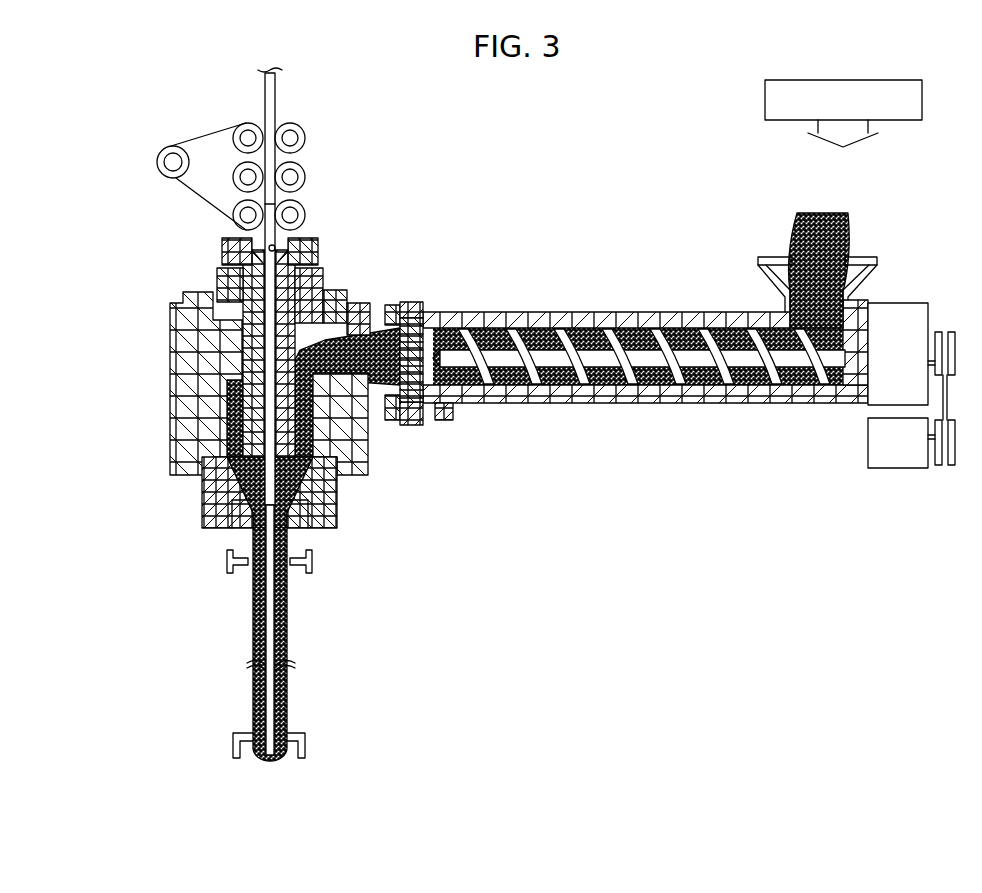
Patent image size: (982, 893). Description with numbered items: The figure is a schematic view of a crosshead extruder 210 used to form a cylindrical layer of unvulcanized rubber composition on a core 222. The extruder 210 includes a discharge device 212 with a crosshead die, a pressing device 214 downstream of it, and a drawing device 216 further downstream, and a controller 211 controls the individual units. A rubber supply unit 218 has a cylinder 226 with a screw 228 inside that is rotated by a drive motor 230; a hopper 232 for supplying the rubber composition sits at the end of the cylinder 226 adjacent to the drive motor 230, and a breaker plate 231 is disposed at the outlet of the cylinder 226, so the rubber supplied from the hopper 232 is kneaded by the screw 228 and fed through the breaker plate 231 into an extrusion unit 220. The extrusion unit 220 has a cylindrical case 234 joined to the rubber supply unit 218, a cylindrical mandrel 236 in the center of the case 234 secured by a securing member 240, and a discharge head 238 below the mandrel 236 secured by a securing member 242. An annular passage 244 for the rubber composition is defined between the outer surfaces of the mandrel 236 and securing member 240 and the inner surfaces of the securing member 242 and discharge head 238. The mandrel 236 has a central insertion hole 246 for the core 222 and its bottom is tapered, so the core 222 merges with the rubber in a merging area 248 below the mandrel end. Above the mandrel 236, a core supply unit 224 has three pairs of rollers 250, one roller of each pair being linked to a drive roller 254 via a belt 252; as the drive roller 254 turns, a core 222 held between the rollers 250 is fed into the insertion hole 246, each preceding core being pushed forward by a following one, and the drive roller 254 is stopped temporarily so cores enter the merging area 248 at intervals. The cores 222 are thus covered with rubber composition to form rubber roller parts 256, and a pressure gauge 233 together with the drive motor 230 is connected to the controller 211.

The extruder 210 is at (110, 283).
The controller 211 is at (888, 86).
The discharge device 212 is at (160, 399).
The pressing device 214 is at (225, 560).
The drawing device 216 is at (234, 757).
The rubber supply unit 218 is at (583, 292).
The extrusion unit 220 is at (352, 505).
The core 222 is at (276, 85).
The core supply unit 224 is at (239, 151).
The cylinder 226 is at (622, 318).
The screw 228 is at (698, 356).
The drive motor 230 is at (898, 463).
The breaker plate 231 is at (424, 313).
The hopper 232 is at (790, 262).
The pressure gauge 233 is at (445, 421).
The case 234 is at (368, 305).
The mandrel 236 is at (335, 300).
The discharge head 238 is at (298, 520).
The securing member 240 is at (312, 272).
The securing member 242 is at (340, 492).
The annular passage 244 is at (335, 437).
The insertion hole 246 is at (276, 246).
The merging area 248 is at (252, 510).
The pairs of rollers 250 is at (300, 210).
The belt 252 is at (180, 193).
The drive roller 254 is at (157, 161).
The rubber roller part 256 is at (240, 648).